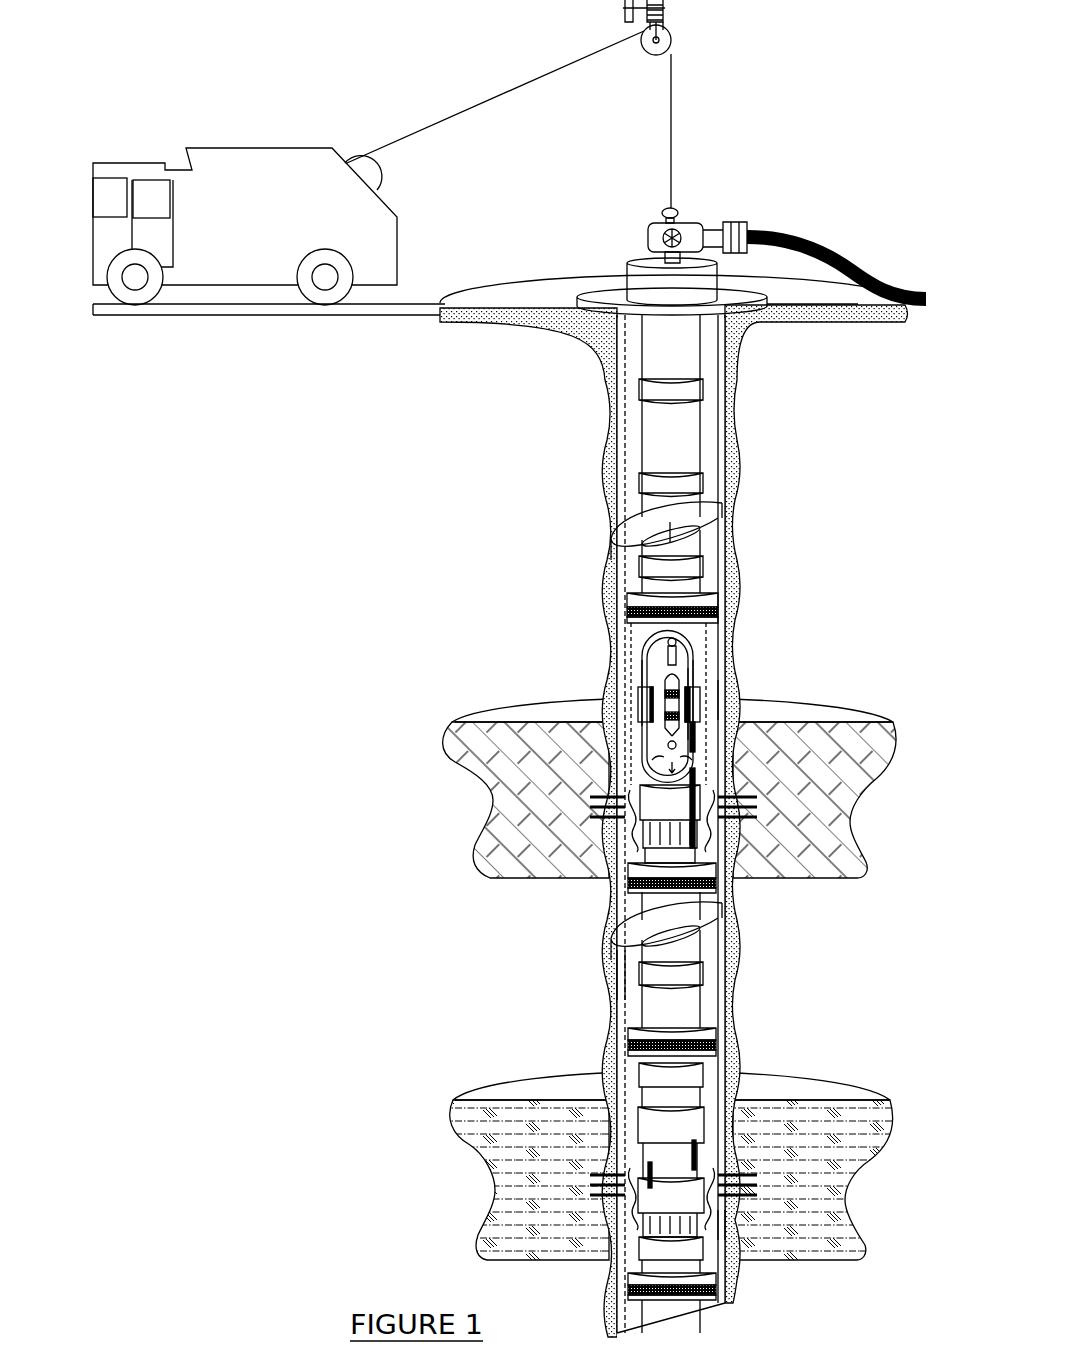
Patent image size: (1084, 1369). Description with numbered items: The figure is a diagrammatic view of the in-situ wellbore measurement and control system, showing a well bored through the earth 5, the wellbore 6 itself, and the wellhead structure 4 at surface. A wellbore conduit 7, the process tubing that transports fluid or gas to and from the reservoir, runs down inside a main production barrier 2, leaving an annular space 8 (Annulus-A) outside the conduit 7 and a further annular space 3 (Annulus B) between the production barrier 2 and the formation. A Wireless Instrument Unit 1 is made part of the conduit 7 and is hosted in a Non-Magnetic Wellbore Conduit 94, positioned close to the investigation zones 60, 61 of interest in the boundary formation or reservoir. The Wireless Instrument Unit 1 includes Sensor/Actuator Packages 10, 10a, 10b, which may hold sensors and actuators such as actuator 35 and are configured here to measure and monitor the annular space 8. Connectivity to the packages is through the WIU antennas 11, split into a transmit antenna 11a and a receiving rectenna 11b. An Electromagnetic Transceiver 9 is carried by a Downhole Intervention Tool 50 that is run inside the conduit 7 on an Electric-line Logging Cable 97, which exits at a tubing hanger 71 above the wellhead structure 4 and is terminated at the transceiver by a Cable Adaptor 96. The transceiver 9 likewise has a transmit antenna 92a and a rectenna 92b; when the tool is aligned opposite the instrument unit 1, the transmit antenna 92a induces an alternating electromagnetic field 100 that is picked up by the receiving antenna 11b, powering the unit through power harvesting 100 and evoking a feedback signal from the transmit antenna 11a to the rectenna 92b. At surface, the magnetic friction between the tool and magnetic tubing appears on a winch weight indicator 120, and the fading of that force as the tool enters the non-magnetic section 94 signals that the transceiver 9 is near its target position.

The Wireless Instrument Unit (WIU) 1 is at (700, 690).
The main production barrier 2 is at (613, 497).
The annular space (Annulus B) 3 is at (738, 390).
The wellhead structure 4 is at (634, 317).
The earth 5 is at (735, 430).
The wellbore 6 is at (604, 995).
The wellbore conduit 7 is at (660, 448).
The annular space (Annulus-A) 8 is at (708, 547).
The Electromagnetic Transceiver (ET) 9 is at (703, 697).
The Sensor/Actuator Package (SAP) 10 is at (697, 733).
The Sensor/Actuator Package 10a is at (730, 1227).
The Sensor/Actuator Package 10b is at (685, 1243).
The WIU antennas 11 is at (640, 698).
The transmit antenna 11a is at (652, 692).
The receiving antenna (rectenna) 11b is at (618, 690).
The actuator 35 is at (683, 833).
The Downhole Intervention Tool (DIT) 50 is at (691, 867).
The investigation zone 60 is at (820, 877).
The investigation zone 61 is at (780, 1248).
The tubing hanger 71 is at (658, 278).
The transmit antenna of ET 92a is at (692, 716).
The rectenna of ET 92b is at (700, 673).
The Non-Magnetic Wellbore Conduit (NMWC) 94 is at (700, 657).
The Cable Adaptor 96 is at (705, 630).
The Electric-line Logging Cable (ELC) 97 is at (673, 165).
The electromagnetic (power harvesting) module 100 is at (697, 773).
The winch weight indicator 120 is at (668, 14).